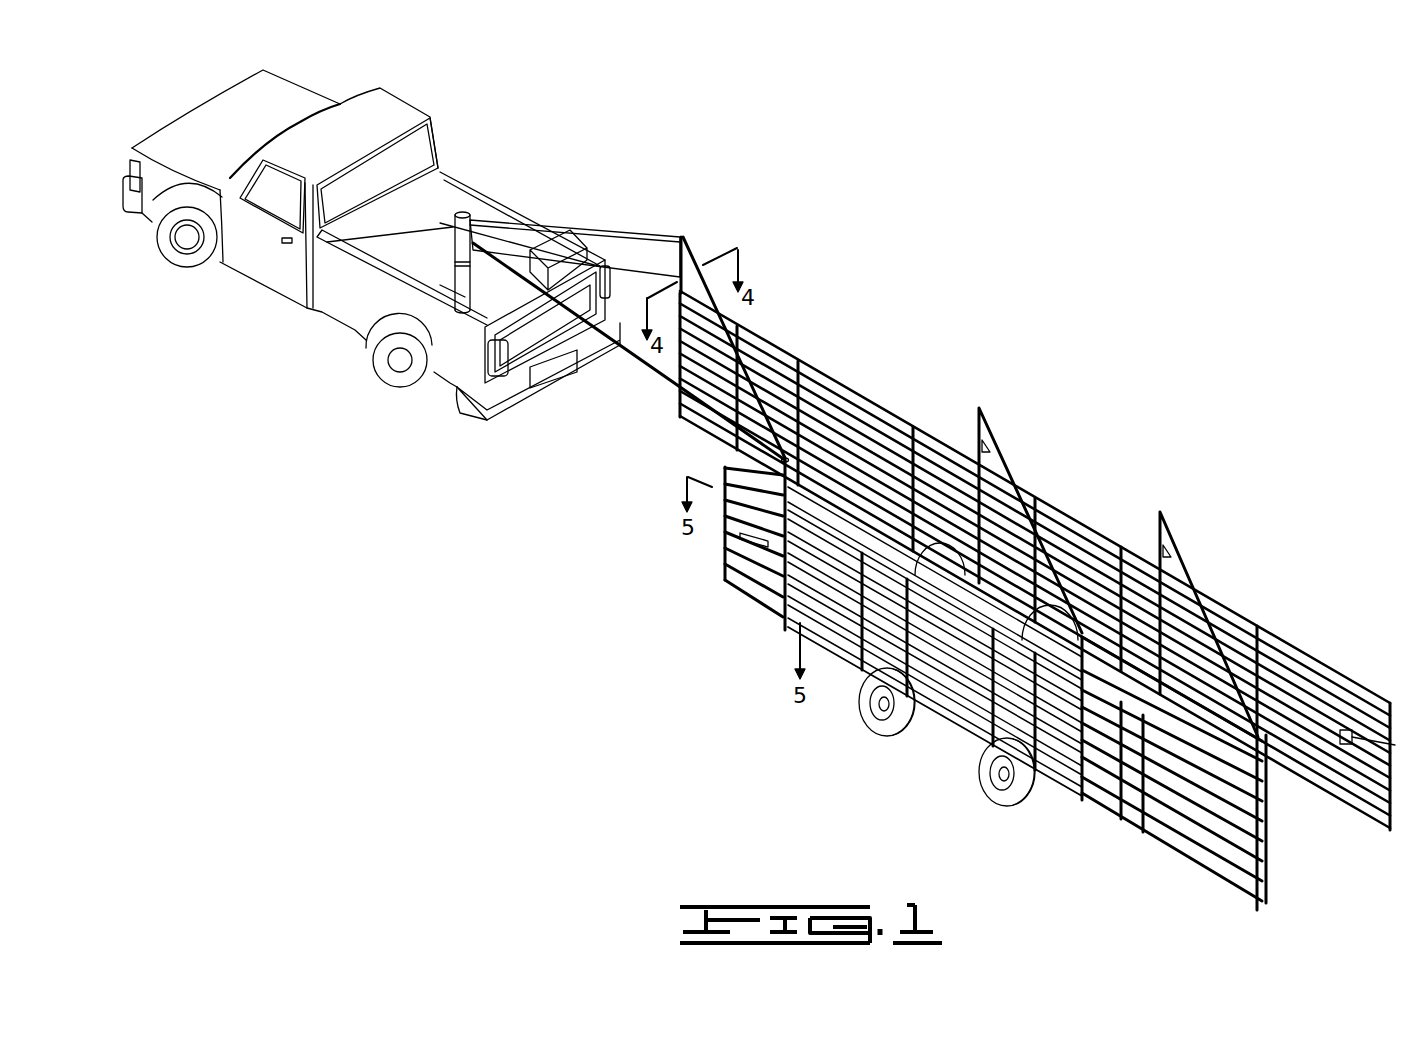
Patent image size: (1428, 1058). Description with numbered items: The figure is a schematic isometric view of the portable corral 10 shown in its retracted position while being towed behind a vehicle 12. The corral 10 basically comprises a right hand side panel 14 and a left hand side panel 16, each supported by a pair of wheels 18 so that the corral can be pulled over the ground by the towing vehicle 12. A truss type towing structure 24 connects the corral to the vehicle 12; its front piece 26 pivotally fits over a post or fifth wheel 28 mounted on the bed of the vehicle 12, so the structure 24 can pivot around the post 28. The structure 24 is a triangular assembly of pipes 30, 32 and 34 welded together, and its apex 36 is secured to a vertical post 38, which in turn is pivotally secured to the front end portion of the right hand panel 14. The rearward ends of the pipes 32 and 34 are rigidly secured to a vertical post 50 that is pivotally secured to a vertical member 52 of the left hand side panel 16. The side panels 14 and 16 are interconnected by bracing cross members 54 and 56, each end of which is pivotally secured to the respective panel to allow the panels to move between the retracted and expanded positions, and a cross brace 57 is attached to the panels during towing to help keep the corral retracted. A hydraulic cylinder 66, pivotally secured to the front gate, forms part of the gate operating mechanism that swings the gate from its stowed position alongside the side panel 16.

The portable corral 10 is at (1035, 600).
The towing vehicle 12 is at (400, 100).
The right hand side panel 14 is at (1035, 600).
The left hand side panel 16 is at (975, 625).
The wheels 18 is at (858, 713).
The truss type towing structure 24 is at (627, 303).
The front piece 26 is at (462, 212).
The post or fifth wheel 28 is at (457, 283).
The pipe 30 is at (590, 232).
The pipe 32 is at (748, 370).
The pipe 34 is at (643, 368).
The apex 36 is at (685, 240).
The vertical post 38 is at (680, 260).
The vertical post 50 is at (748, 472).
The vertical member 52 is at (784, 615).
The bracing cross member 54 is at (1005, 462).
The bracing cross member 56 is at (1192, 562).
The cross brace 57 is at (1100, 655).
The hydraulic cylinder 66 is at (752, 535).